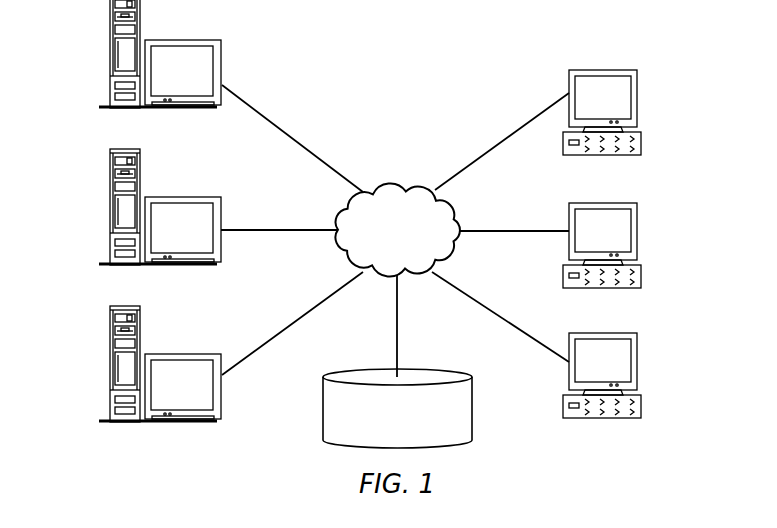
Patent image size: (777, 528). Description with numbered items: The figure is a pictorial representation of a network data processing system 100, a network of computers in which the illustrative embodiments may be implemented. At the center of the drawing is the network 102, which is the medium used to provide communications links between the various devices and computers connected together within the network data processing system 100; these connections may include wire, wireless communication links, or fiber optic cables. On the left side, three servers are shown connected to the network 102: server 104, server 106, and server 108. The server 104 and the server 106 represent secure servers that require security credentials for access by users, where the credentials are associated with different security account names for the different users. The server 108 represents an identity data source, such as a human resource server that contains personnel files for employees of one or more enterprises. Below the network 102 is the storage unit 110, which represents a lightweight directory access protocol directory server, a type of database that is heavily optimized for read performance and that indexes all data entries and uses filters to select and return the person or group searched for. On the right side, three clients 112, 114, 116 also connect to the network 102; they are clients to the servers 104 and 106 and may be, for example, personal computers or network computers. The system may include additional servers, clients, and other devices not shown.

The network data processing system 100 is at (445, 78).
The network 102 is at (367, 184).
The server 104 is at (110, 53).
The server 106 is at (110, 210).
The server 108 is at (110, 365).
The storage unit 110 is at (323, 420).
The client 112 is at (637, 97).
The client 114 is at (637, 232).
The client 116 is at (637, 362).